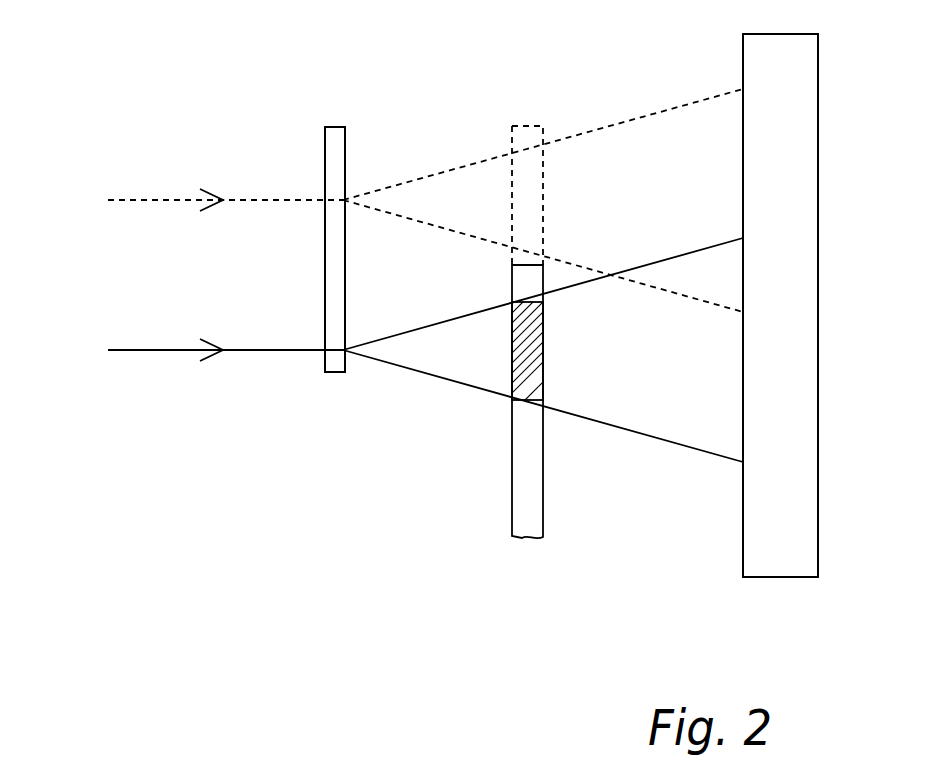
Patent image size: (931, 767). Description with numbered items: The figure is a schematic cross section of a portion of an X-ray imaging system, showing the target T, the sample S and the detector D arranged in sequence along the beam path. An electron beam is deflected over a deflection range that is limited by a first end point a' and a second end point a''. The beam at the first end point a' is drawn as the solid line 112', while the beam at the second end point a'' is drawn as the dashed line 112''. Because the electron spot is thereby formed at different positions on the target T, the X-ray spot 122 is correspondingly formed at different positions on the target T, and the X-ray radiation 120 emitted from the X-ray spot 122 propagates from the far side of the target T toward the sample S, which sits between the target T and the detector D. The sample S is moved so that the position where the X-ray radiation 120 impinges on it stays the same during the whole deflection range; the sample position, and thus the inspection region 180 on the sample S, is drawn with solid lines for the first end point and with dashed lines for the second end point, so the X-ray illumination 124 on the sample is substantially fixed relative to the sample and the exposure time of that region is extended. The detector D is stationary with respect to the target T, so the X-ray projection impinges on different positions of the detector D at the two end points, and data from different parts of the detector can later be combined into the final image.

The electron beam at second endpoint 112'' is at (225, 156).
The electron beam at first endpoint 112' is at (225, 401).
The X-ray spot 122 is at (358, 176).
The X-ray radiation 120 is at (632, 218).
The X-ray illumination 124 is at (497, 369).
The inspection region 180 is at (545, 378).
The target T is at (332, 126).
The sample S is at (528, 540).
The detector D is at (775, 578).
The first end point a' is at (283, 384).
The second end point a'' is at (290, 148).